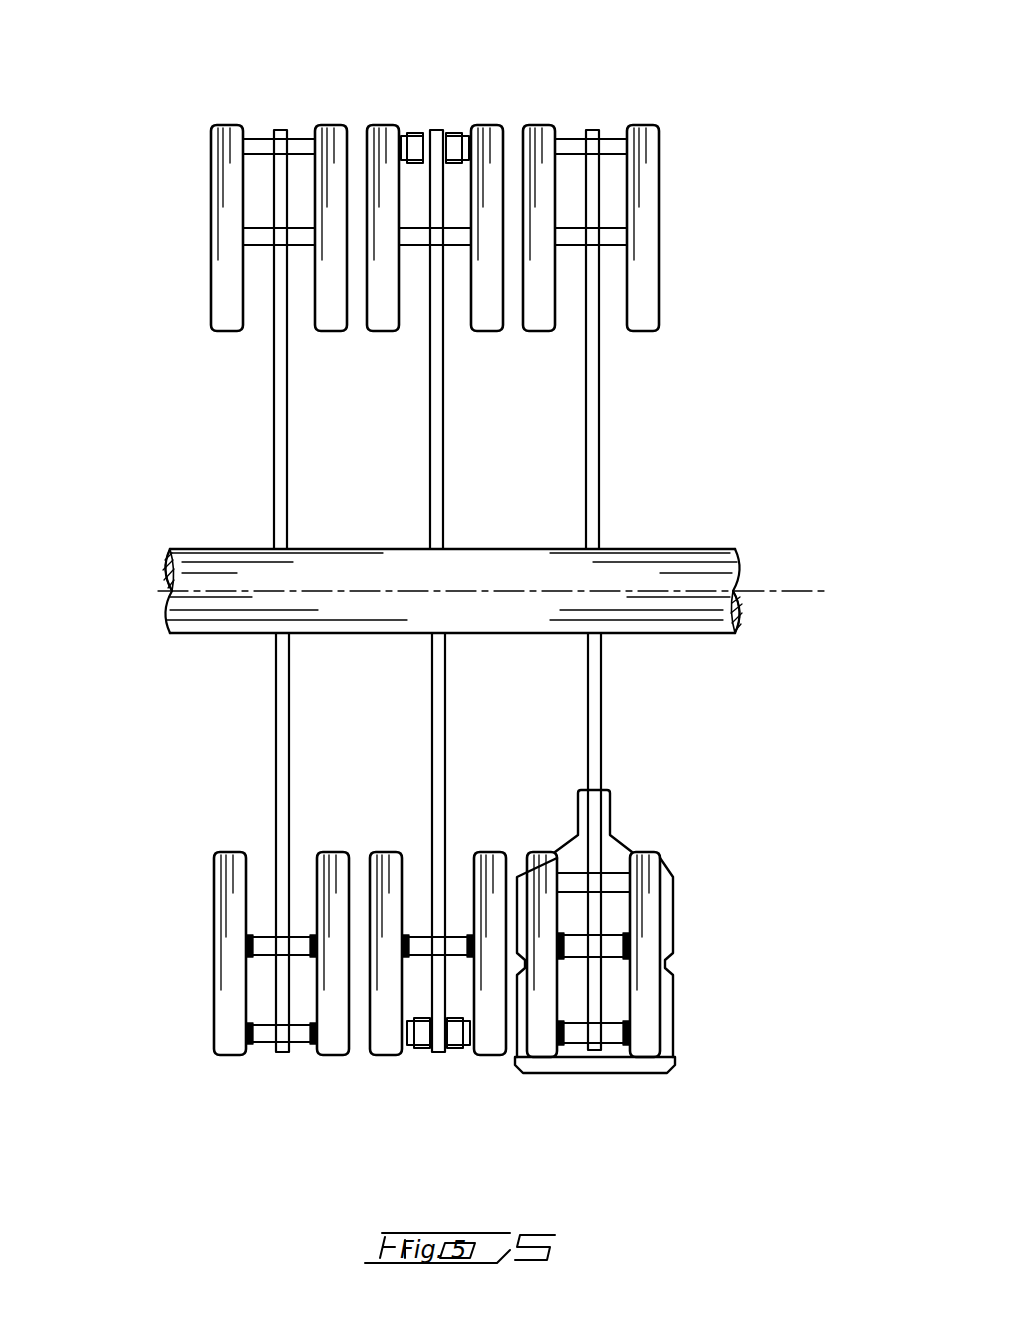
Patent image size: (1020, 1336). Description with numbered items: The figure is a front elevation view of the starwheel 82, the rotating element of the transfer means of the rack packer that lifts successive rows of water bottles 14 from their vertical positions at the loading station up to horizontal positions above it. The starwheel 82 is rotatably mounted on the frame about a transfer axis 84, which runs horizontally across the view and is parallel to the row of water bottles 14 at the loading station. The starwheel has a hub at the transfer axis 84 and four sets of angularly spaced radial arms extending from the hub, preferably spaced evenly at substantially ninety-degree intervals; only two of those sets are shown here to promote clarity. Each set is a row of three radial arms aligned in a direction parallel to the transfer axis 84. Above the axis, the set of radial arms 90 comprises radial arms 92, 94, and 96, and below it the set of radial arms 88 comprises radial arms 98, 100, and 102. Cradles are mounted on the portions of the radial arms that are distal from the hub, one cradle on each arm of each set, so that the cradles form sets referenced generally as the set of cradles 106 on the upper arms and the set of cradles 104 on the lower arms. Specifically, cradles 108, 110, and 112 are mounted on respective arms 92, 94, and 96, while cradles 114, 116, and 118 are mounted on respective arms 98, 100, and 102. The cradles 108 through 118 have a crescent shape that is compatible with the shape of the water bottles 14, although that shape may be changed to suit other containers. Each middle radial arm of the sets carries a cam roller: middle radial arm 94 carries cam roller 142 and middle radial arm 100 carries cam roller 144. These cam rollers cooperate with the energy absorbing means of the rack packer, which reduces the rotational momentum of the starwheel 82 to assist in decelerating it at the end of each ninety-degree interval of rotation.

The water bottles 14 is at (655, 1067).
The starwheel 82 is at (748, 343).
The transfer axis 84 is at (790, 591).
The set of radial arms 88 is at (233, 819).
The set of radial arms 90 is at (257, 365).
The radial arm 92 is at (282, 490).
The radial arm 94 is at (440, 495).
The radial arm 96 is at (595, 492).
The radial arm 98 is at (282, 732).
The radial arm 100 is at (440, 737).
The radial arm 102 is at (596, 736).
The set of cradles 104 is at (668, 1008).
The set of cradles 106 is at (210, 205).
The cradle 108 is at (220, 127).
The cradle 110 is at (380, 127).
The cradle 112 is at (535, 127).
The cradle 114 is at (227, 1043).
The cradle 116 is at (387, 1057).
The cradle 118 is at (538, 1053).
The cam roller 142 is at (453, 127).
The cam roller 144 is at (417, 1045).